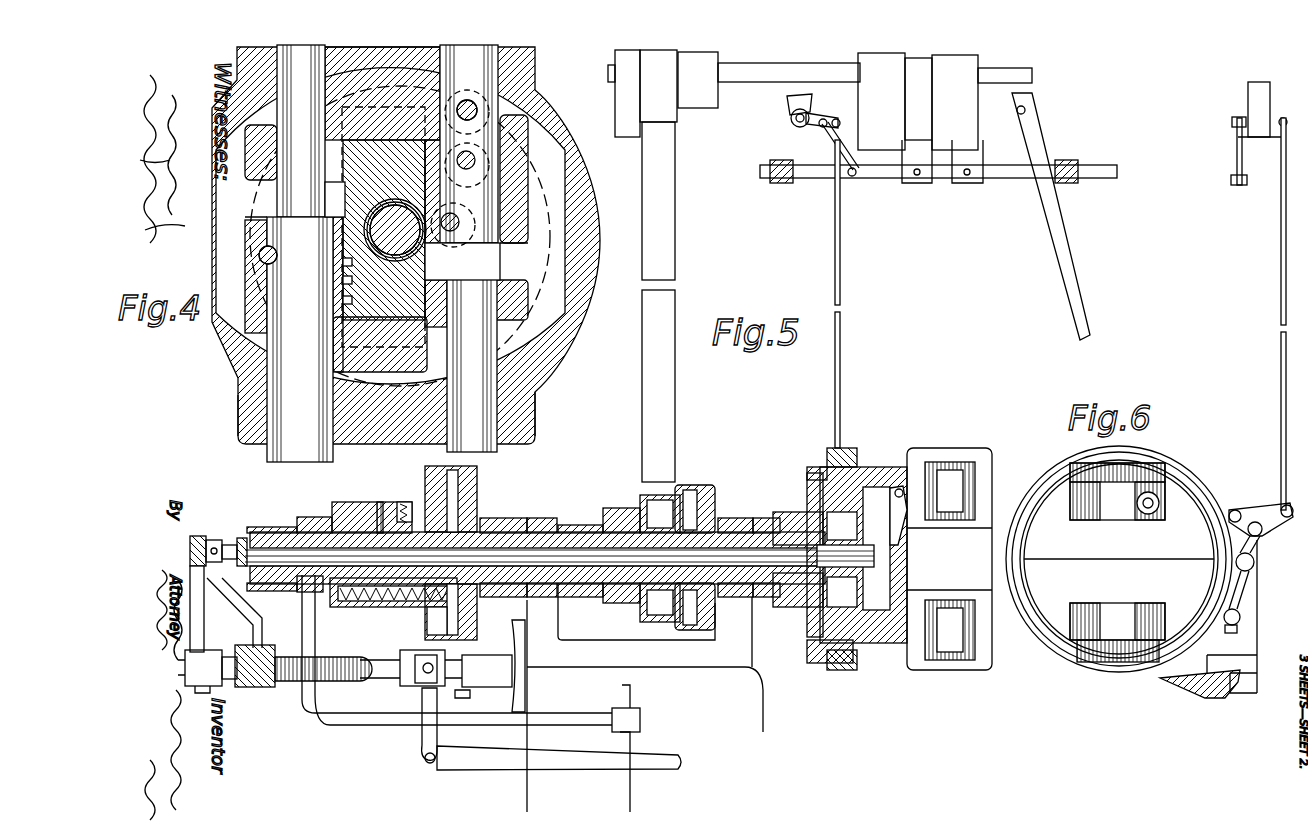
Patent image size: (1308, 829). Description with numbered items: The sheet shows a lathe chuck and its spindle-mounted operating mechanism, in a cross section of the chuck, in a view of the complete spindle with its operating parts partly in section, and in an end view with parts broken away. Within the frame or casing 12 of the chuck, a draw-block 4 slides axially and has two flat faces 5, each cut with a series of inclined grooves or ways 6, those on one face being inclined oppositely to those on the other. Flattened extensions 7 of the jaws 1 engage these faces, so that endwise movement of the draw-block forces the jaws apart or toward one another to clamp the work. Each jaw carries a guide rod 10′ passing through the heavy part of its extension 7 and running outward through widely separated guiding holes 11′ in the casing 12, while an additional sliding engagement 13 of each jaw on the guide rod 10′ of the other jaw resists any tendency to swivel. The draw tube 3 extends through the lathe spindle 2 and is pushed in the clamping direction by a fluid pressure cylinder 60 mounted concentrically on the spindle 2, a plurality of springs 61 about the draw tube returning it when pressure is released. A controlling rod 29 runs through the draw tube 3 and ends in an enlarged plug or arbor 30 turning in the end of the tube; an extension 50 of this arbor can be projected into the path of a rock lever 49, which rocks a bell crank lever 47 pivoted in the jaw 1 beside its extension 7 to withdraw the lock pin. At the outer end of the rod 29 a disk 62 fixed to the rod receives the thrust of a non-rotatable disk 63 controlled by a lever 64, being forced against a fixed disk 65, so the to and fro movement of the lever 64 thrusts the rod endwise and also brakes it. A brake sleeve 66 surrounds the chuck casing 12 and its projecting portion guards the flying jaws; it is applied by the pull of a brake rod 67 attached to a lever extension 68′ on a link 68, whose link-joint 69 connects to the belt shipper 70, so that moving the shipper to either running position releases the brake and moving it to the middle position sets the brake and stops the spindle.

In FIG. 5, the jaws 1 is at (977, 506).
In FIG. 6, the jaws 1 is at (1082, 520).
In FIG. 5, the lathe spindle 2 is at (579, 532).
In FIG. 5, the draw tube 3 is at (757, 518).
In FIG. 4, the draw-block 4 is at (384, 227).
In FIG. 5, the draw-block 4 is at (895, 582).
In FIG. 4, the flat faces 5 is at (345, 191).
In FIG. 4, the inclined grooves or ways 6 is at (343, 265).
In FIG. 4, the extensions of the jaws 7 is at (272, 218).
In FIG. 5, the extensions of the jaws 7 is at (863, 492).
In FIG. 4, the guide rod 10′ is at (287, 462).
In FIG. 4, the guiding holes 11′ is at (265, 406).
In FIG. 4, the frame or casing 12 is at (577, 193).
In FIG. 4, the sliding engagement 13 is at (262, 158).
In FIG. 5, the rod 29 is at (772, 568).
In FIG. 5, the plug or arbor 30 is at (817, 527).
In FIG. 5, the bell crank lever 47 is at (893, 480).
In FIG. 5, the rock lever 49 is at (900, 531).
In FIG. 5, the extension of the arbor 50 is at (868, 553).
In FIG. 5, the fluid pressure cylinder 60 is at (463, 492).
In FIG. 5, the springs 61 is at (403, 505).
In FIG. 5, the disk 62 is at (212, 540).
In FIG. 5, the non-rotatable disk 63 is at (228, 532).
In FIG. 5, the lever 64 is at (565, 762).
In FIG. 5, the fixed disk 65 is at (191, 540).
In FIG. 5, the brake sleeve 66 is at (940, 449).
In FIG. 6, the brake sleeve 66 is at (1172, 467).
In FIG. 5, the brake rod 67 is at (841, 372).
In FIG. 6, the brake rod 67 is at (1281, 421).
In FIG. 5, the link 68 is at (835, 150).
In FIG. 5, the lever extension 68′ is at (840, 118).
In FIG. 5, the link-joint 69 is at (856, 178).
In FIG. 5, the belt shipper 70 is at (900, 180).